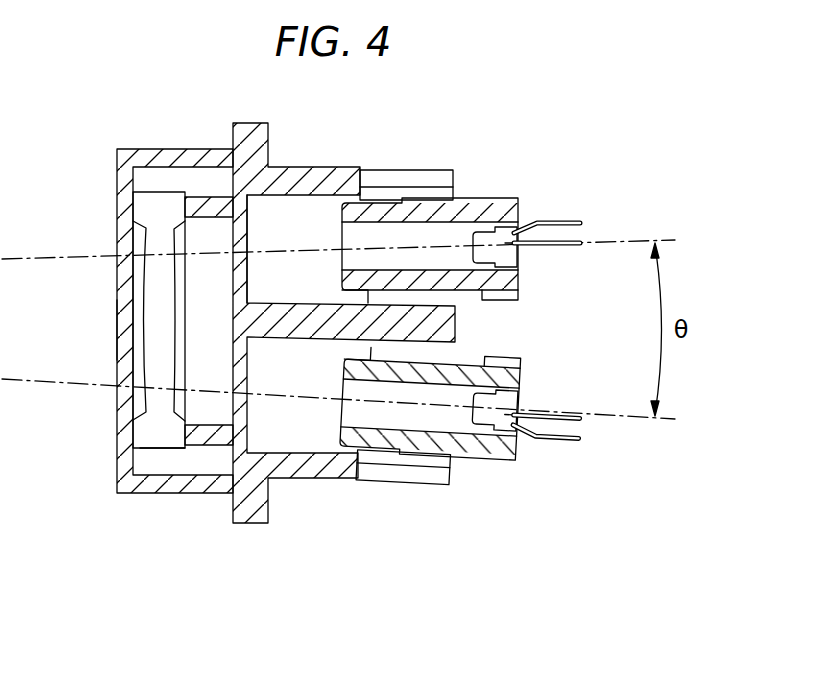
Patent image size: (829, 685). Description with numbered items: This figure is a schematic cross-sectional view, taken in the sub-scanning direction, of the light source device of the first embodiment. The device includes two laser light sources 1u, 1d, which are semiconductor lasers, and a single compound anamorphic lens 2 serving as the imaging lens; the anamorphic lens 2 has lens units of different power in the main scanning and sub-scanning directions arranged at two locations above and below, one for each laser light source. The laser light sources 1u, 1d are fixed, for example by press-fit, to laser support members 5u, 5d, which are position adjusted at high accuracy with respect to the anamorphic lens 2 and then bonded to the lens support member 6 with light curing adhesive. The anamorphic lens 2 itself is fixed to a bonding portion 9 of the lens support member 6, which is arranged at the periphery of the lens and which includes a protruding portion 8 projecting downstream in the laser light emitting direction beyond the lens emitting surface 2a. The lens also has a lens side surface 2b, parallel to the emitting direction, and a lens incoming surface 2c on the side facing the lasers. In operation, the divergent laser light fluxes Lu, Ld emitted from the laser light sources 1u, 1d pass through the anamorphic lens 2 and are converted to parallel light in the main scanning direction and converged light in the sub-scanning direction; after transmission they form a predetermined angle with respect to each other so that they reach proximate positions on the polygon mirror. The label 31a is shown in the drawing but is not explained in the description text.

The protruding portion 8 is at (133, 149).
The compound anamorphic lens 2 is at (157, 203).
The lens emitting surface 2a is at (117, 326).
The lens side surface 2b is at (157, 450).
The lens incoming surface 2c is at (188, 211).
The bonding portion 9 is at (205, 446).
The lens support member 6 is at (303, 215).
The laser support member 5u is at (457, 228).
The laser support member 5d is at (452, 420).
The laser light source 1u is at (507, 225).
The laser light source 1d is at (520, 437).
The housing 31a is at (308, 508).
The laser light flux Lu is at (60, 256).
The laser light flux Ld is at (60, 386).